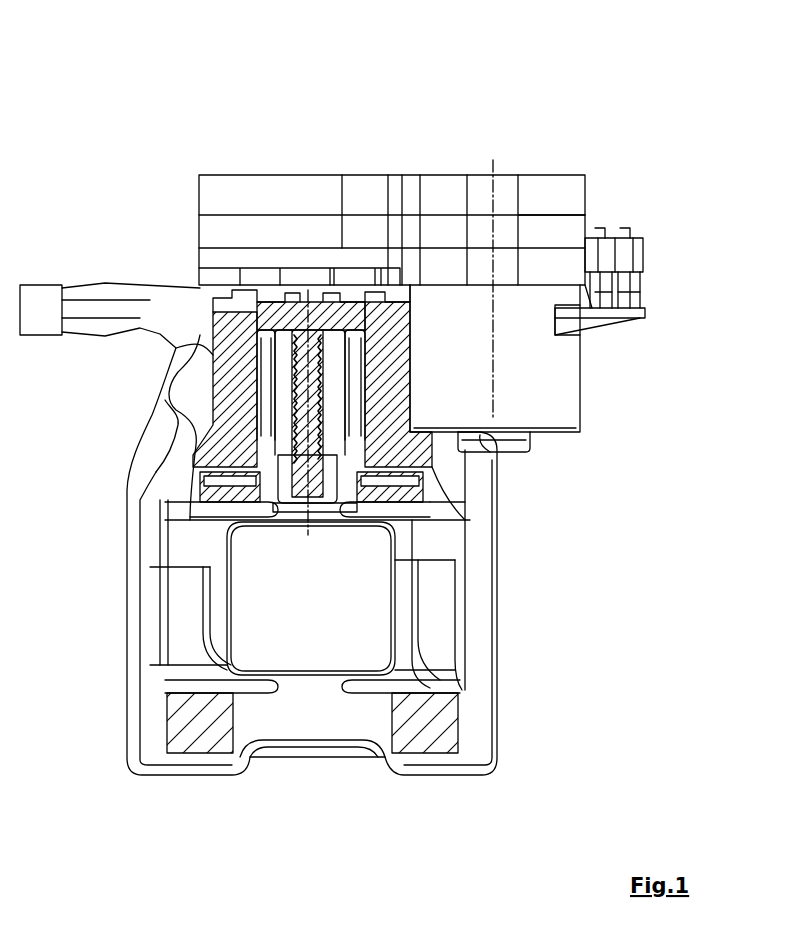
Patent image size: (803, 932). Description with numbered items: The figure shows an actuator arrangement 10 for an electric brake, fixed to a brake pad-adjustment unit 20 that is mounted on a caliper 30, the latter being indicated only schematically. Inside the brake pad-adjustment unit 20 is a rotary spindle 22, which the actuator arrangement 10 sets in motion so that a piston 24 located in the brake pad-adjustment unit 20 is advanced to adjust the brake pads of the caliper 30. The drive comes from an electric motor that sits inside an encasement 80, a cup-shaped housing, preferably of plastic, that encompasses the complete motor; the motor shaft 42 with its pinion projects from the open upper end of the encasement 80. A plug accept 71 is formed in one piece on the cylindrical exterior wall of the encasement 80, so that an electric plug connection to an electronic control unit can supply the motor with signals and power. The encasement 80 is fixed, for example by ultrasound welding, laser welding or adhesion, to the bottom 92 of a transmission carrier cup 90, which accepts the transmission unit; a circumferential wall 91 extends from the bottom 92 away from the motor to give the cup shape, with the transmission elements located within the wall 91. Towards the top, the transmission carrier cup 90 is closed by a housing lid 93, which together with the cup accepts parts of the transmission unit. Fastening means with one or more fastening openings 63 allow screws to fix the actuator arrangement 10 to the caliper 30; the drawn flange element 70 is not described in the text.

The actuator arrangement 10 is at (284, 140).
The transmission carrier cup 90 is at (446, 222).
The housing lid 93 is at (548, 195).
The circumferential wall 91 is at (592, 226).
The plug accept 71 is at (624, 258).
The bottom 92 is at (630, 320).
The encasement 80 is at (566, 385).
The motor shaft 42 is at (506, 445).
The mounting flange 70 is at (232, 276).
The rotary spindle 22 is at (265, 378).
The brake pad-adjustment unit 20 is at (300, 440).
The piston 24 is at (245, 505).
The fastening opening 63 is at (486, 705).
The caliper 30 is at (330, 730).